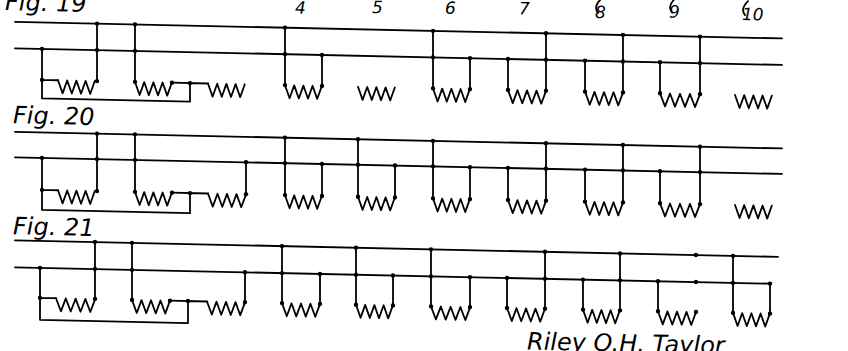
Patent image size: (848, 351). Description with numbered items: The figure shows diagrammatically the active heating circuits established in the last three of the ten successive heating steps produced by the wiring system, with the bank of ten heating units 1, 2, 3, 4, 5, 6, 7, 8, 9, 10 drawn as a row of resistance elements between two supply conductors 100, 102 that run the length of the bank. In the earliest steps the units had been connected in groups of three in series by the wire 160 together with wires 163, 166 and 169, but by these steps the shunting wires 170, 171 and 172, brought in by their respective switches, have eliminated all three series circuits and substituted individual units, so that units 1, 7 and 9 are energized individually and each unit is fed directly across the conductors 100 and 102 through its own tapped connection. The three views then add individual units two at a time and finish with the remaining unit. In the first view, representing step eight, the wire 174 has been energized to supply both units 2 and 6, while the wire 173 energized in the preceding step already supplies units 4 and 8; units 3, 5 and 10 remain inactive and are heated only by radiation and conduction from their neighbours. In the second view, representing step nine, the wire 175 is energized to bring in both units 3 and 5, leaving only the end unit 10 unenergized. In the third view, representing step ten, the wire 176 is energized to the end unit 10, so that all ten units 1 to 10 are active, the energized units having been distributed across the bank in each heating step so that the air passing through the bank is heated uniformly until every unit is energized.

In FIG. 19, the supply conductor 100 is at (211, 21).
In FIG. 20, the supply conductor 100 is at (221, 133).
In FIG. 21, the supply conductor 100 is at (216, 239).
In FIG. 19, the supply conductor 102 is at (255, 49).
In FIG. 20, the supply conductor 102 is at (201, 157).
In FIG. 21, the supply conductor 102 is at (227, 268).
In FIG. 19, the wire 160 is at (42, 79).
In FIG. 20, the wire 160 is at (42, 175).
In FIG. 21, the wire 160 is at (40, 280).
In FIG. 19, the wire 163 is at (700, 62).
In FIG. 20, the wire 163 is at (700, 170).
In FIG. 21, the wire 163 is at (733, 282).
In FIG. 19, the wire 166 is at (623, 31).
In FIG. 20, the wire 166 is at (623, 141).
In FIG. 21, the wire 166 is at (620, 251).
In FIG. 19, the wire 169 is at (546, 30).
In FIG. 20, the wire 169 is at (546, 138).
In FIG. 21, the wire 169 is at (545, 248).
In FIG. 19, the shunting wire 170 is at (292, 34).
In FIG. 20, the shunting wire 170 is at (292, 144).
In FIG. 21, the shunting wire 170 is at (289, 253).
In FIG. 19, the shunting wire 171 is at (508, 68).
In FIG. 20, the shunting wire 171 is at (395, 184).
In FIG. 21, the shunting wire 171 is at (393, 293).
In FIG. 19, the shunting wire 172 is at (470, 57).
In FIG. 20, the shunting wire 172 is at (470, 170).
In FIG. 21, the shunting wire 172 is at (470, 284).
In FIG. 19, the wire 173 is at (322, 62).
In FIG. 20, the wire 173 is at (322, 183).
In FIG. 21, the wire 173 is at (320, 293).
In FIG. 19, the wire 174 is at (433, 33).
In FIG. 20, the wire 174 is at (440, 140).
In FIG. 21, the wire 174 is at (132, 251).
In FIG. 20, the wire 175 is at (365, 142).
In FIG. 21, the wire 175 is at (363, 251).
In FIG. 21, the wire 176 is at (780, 256).
In FIG. 19, the heating unit 1 is at (76, 77).
In FIG. 20, the heating unit 1 is at (76, 187).
In FIG. 21, the heating unit 1 is at (75, 295).
In FIG. 19, the heating unit 2 is at (153, 80).
In FIG. 20, the heating unit 2 is at (153, 188).
In FIG. 21, the heating unit 2 is at (151, 297).
In FIG. 19, the heating unit 3 is at (226, 81).
In FIG. 20, the heating unit 3 is at (227, 189).
In FIG. 21, the heating unit 3 is at (218, 318).
In FIG. 19, the heating unit 4 is at (299, 94).
In FIG. 20, the heating unit 4 is at (299, 204).
In FIG. 21, the heating unit 4 is at (299, 313).
In FIG. 19, the heating unit 5 is at (374, 93).
In FIG. 20, the heating unit 5 is at (376, 203).
In FIG. 21, the heating unit 5 is at (374, 313).
In FIG. 19, the heating unit 6 is at (452, 91).
In FIG. 20, the heating unit 6 is at (452, 202).
In FIG. 21, the heating unit 6 is at (448, 313).
In FIG. 19, the heating unit 7 is at (524, 90).
In FIG. 20, the heating unit 7 is at (524, 201).
In FIG. 21, the heating unit 7 is at (526, 305).
In FIG. 19, the heating unit 8 is at (601, 88).
In FIG. 20, the heating unit 8 is at (601, 200).
In FIG. 21, the heating unit 8 is at (601, 308).
In FIG. 19, the heating unit 9 is at (674, 87).
In FIG. 20, the heating unit 9 is at (674, 199).
In FIG. 21, the heating unit 9 is at (677, 308).
In FIG. 19, the heating unit 10 is at (746, 85).
In FIG. 20, the heating unit 10 is at (746, 198).
In FIG. 21, the heating unit 10 is at (751, 309).